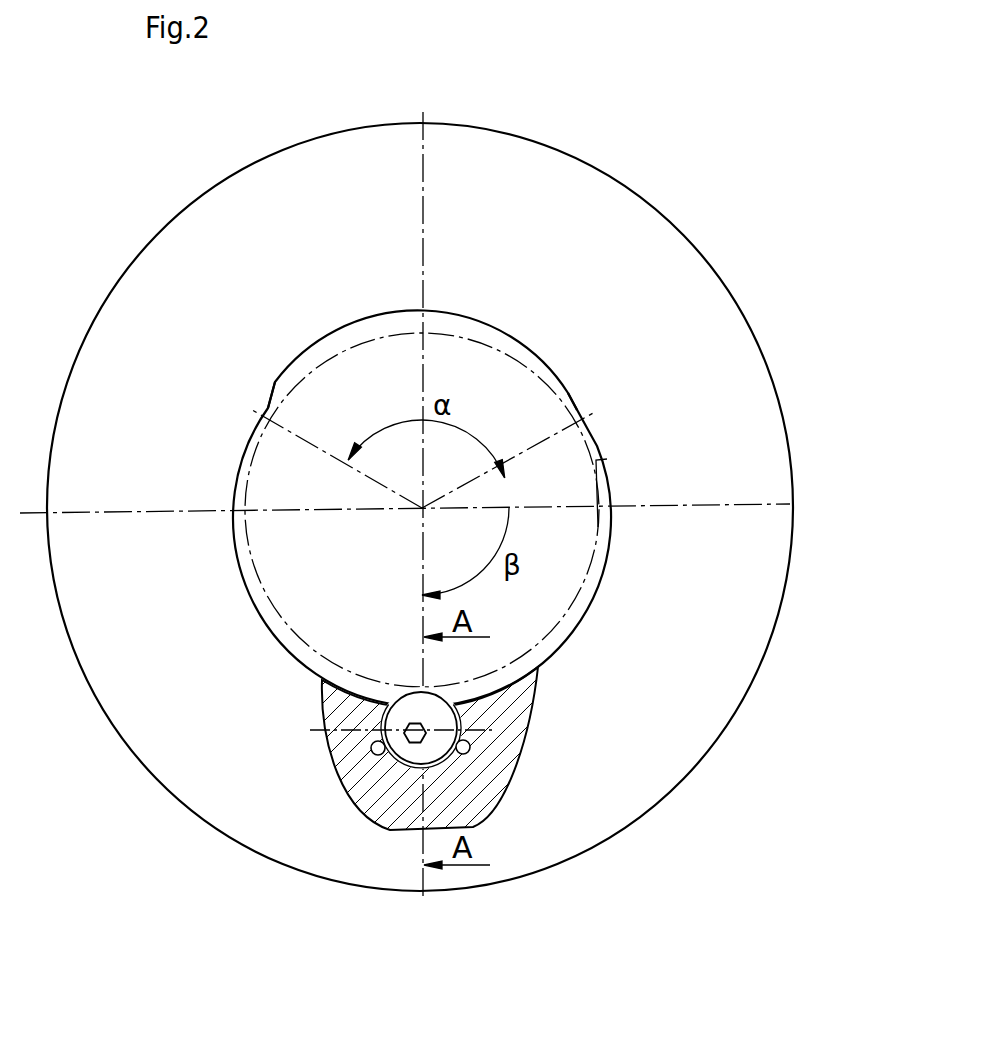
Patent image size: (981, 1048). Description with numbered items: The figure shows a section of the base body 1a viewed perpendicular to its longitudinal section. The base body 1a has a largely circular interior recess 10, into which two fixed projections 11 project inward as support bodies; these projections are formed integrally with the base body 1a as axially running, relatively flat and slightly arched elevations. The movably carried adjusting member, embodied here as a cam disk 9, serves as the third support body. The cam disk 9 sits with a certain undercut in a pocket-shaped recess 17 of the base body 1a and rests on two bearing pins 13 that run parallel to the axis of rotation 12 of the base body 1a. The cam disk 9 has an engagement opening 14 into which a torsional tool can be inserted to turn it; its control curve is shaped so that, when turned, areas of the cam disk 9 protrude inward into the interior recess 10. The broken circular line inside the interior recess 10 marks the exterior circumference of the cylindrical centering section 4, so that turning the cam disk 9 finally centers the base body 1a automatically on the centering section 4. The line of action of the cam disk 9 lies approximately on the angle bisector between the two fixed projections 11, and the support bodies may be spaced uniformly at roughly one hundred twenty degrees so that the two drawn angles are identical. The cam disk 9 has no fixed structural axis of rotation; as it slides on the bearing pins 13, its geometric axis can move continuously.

The base body 1a is at (485, 783).
The cylindrical centering section 4 is at (610, 572).
The cam disk 9 is at (433, 705).
The interior recess 10 is at (606, 466).
The fixed projections 11 is at (268, 415).
The axis of rotation 12 is at (422, 508).
The bearing pins 13 is at (372, 752).
The engagement opening 14 is at (457, 732).
The pocket-shaped recess 17 is at (392, 765).